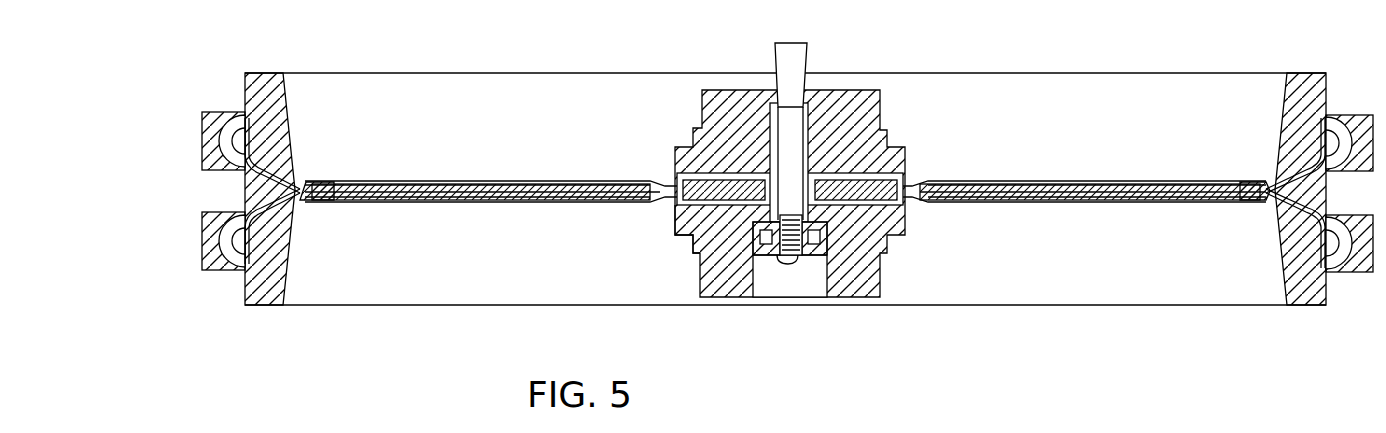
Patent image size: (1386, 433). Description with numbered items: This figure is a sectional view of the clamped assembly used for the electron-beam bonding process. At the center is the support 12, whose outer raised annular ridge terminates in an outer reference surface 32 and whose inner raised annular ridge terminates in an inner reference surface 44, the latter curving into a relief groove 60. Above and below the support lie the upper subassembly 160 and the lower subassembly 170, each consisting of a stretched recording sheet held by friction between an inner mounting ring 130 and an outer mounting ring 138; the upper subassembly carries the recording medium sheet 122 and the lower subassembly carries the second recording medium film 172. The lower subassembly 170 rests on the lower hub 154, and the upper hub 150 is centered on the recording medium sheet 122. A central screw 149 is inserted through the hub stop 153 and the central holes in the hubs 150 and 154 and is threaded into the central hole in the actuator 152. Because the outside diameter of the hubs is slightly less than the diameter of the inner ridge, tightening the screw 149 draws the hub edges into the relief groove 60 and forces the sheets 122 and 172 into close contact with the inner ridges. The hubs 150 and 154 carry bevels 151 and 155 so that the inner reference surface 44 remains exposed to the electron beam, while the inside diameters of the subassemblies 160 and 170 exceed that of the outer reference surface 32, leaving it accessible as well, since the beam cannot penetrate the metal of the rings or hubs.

The support 12 is at (523, 187).
The outer reference surface 32 is at (313, 186).
The inner reference surface 44 is at (668, 185).
The relief groove 60 is at (912, 187).
The recording medium sheet 122 is at (250, 180).
The inner mounting ring 130 is at (1306, 75).
The outer mounting ring 138 is at (208, 112).
The screw 149 is at (793, 265).
The upper hub 150 is at (858, 98).
The bevel 151 is at (670, 167).
The actuator 152 is at (775, 60).
The hub stop 153 is at (768, 262).
The lower hub 154 is at (860, 292).
The bevel 155 is at (673, 218).
The upper subassembly 160 is at (989, 71).
The lower subassembly 170 is at (1081, 308).
The second recording medium film 172 is at (1325, 206).